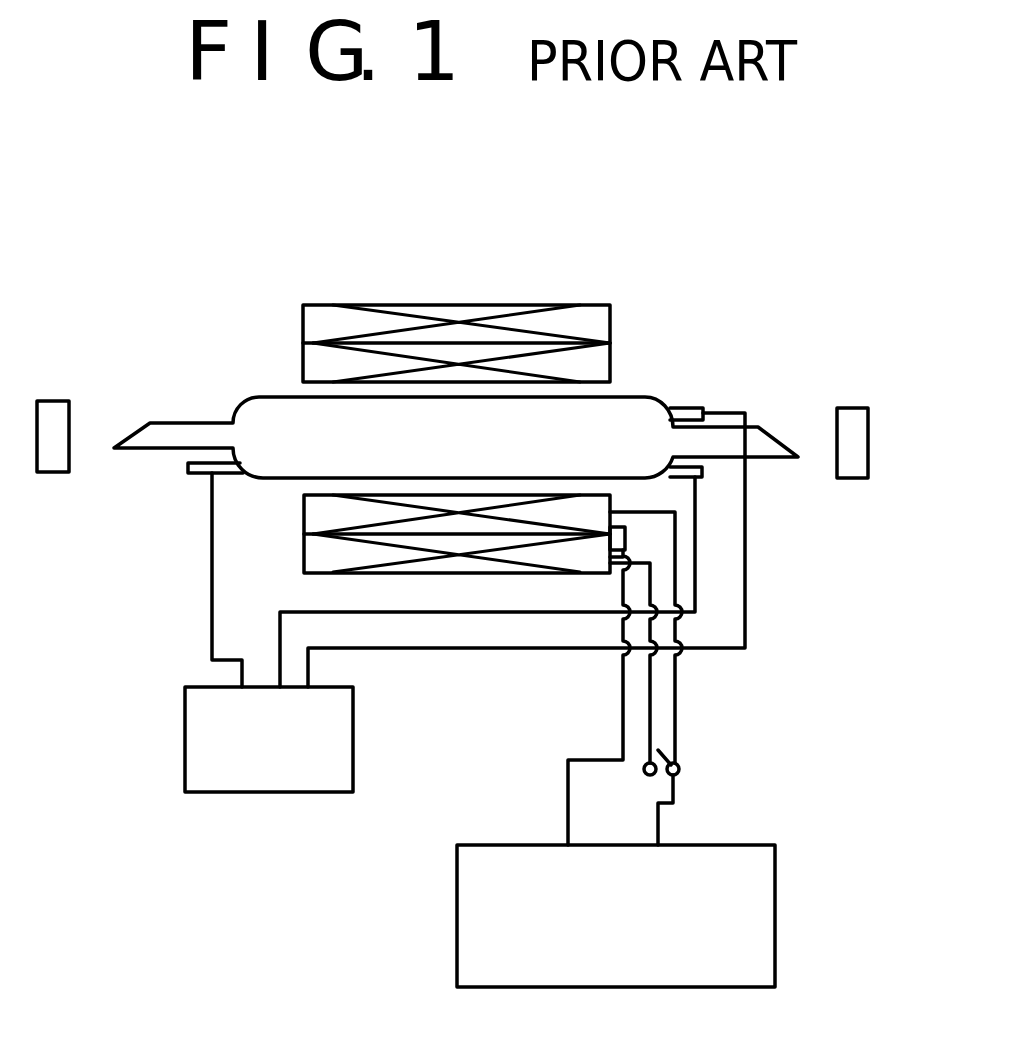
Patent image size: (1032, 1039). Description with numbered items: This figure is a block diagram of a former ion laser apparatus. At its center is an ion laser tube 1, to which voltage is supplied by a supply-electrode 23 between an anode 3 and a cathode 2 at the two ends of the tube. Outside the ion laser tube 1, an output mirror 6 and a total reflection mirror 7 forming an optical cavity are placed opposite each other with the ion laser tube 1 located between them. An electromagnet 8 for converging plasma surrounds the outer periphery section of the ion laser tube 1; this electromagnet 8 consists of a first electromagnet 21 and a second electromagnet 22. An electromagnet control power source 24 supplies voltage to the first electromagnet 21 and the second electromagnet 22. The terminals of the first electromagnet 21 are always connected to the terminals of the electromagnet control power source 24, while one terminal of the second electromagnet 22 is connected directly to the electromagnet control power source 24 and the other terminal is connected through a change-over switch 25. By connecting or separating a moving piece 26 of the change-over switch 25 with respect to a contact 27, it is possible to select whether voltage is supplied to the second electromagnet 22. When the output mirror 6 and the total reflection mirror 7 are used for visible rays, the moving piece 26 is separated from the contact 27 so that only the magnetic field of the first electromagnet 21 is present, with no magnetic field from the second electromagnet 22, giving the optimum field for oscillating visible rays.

The ion laser tube 1 is at (260, 395).
The cathode 2 is at (703, 407).
The anode 3 is at (185, 475).
The output mirror 6 is at (52, 400).
The total reflection mirror 7 is at (868, 447).
The electromagnet 8 is at (442, 303).
The first electromagnet 21 is at (612, 368).
The second electromagnet 22 is at (612, 325).
The supply-electrode 23 is at (272, 792).
The electromagnet control power source 24 is at (775, 927).
The change-over switch 25 is at (678, 775).
The moving piece 26 is at (672, 750).
The contact 27 is at (645, 776).